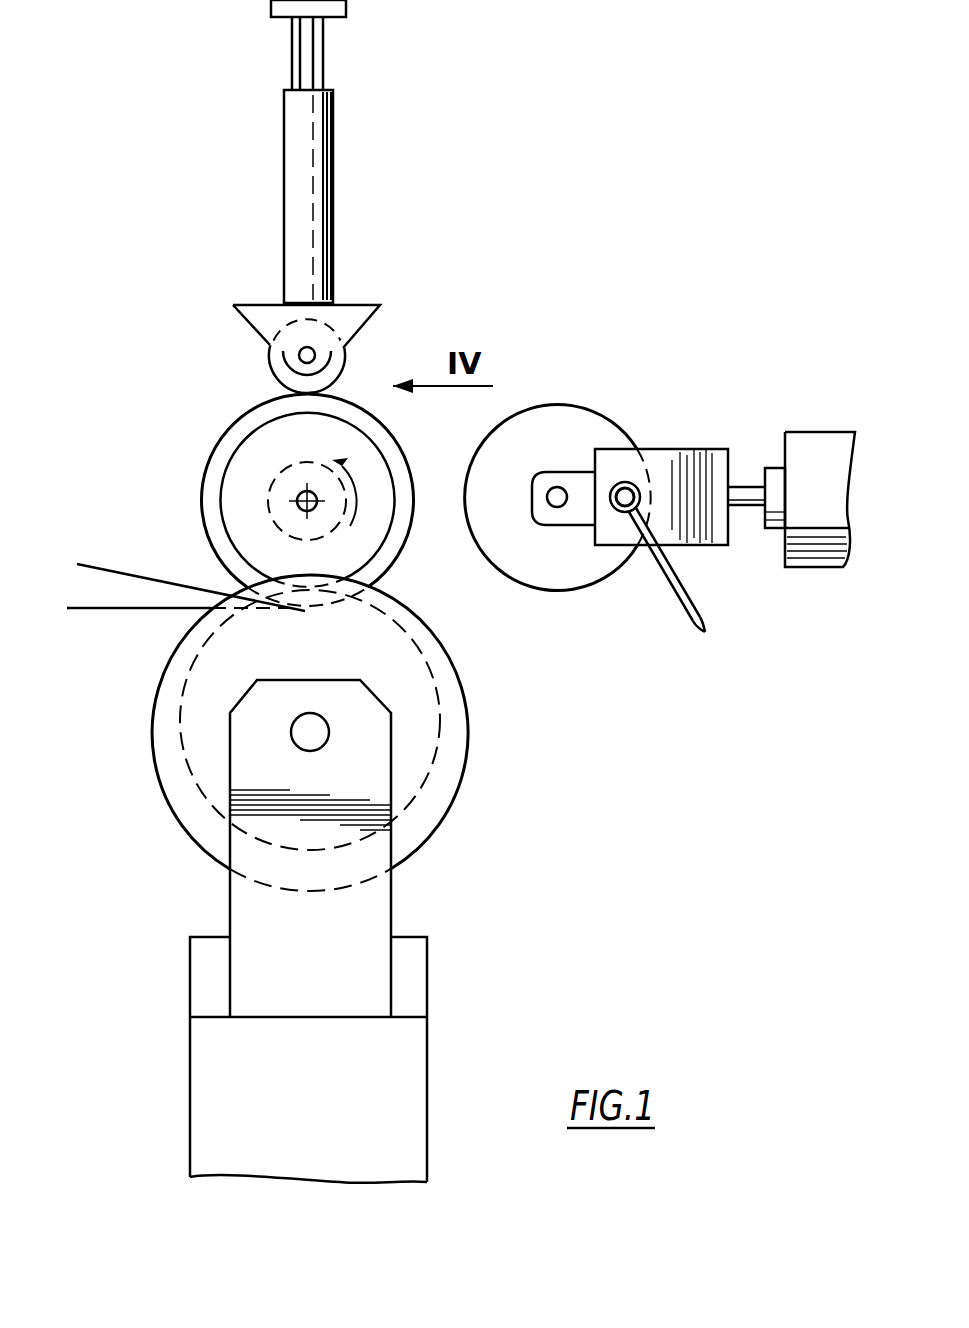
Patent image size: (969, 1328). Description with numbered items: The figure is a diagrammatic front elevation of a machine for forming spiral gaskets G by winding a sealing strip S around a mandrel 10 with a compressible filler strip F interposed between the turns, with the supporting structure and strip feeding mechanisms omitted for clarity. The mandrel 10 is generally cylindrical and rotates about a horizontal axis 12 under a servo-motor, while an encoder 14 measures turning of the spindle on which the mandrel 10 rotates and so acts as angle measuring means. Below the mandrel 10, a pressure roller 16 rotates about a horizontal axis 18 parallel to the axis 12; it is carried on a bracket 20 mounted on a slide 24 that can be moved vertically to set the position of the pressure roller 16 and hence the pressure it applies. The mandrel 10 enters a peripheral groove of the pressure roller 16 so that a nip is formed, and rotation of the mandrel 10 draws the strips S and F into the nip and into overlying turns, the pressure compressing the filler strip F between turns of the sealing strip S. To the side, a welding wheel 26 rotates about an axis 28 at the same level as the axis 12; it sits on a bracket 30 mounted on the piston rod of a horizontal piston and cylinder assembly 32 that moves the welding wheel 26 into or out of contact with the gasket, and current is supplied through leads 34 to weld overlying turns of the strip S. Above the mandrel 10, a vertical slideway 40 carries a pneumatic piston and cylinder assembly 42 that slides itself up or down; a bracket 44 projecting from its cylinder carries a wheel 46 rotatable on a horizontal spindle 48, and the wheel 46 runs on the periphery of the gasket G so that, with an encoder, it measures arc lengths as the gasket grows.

The mandrel 10 is at (232, 484).
The horizontal axis 12 is at (297, 506).
The encoder 14 is at (213, 453).
The pressure roller 16 is at (175, 787).
The horizontal axis 18 is at (318, 735).
The bracket 20 is at (240, 903).
The slide 24 is at (200, 1042).
The welding wheel 26 is at (580, 577).
The axis 28 is at (556, 488).
The bracket 30 is at (712, 458).
The piston and cylinder assembly 32 is at (815, 565).
The leads 34 is at (697, 625).
The vertical slideway 40 is at (298, 66).
The pneumatic piston and cylinder assembly 42 is at (290, 150).
The bracket 44 is at (253, 308).
The wheel 46 is at (345, 365).
The horizontal spindle 48 is at (298, 352).
The spiral gasket G is at (243, 417).
The compressible filler strip F is at (98, 562).
The sealing strip S is at (108, 612).